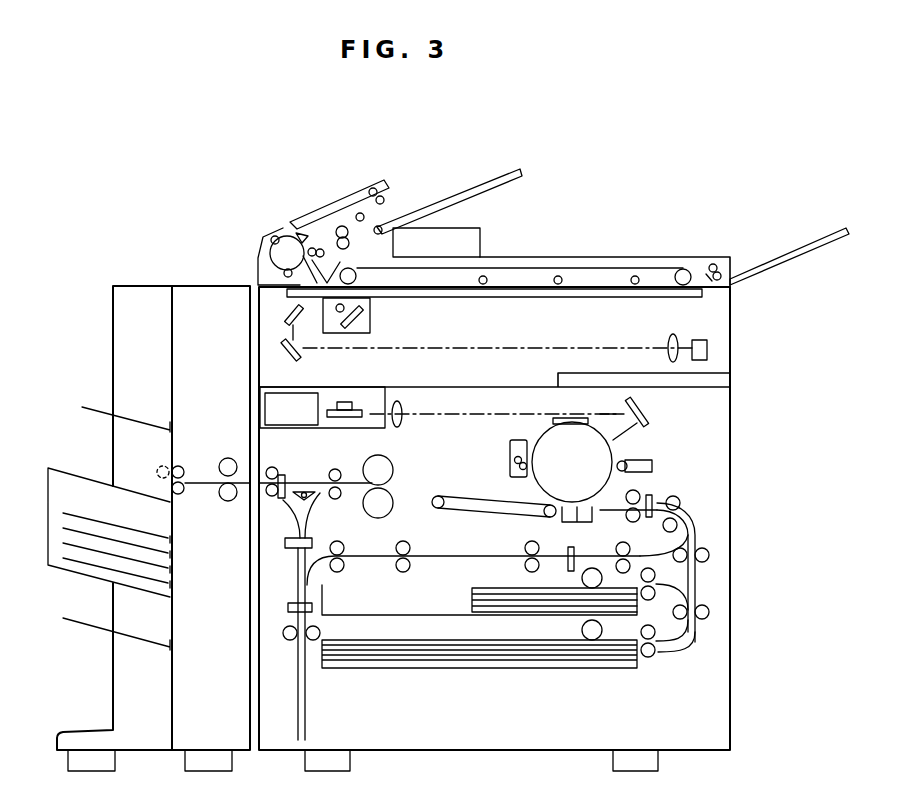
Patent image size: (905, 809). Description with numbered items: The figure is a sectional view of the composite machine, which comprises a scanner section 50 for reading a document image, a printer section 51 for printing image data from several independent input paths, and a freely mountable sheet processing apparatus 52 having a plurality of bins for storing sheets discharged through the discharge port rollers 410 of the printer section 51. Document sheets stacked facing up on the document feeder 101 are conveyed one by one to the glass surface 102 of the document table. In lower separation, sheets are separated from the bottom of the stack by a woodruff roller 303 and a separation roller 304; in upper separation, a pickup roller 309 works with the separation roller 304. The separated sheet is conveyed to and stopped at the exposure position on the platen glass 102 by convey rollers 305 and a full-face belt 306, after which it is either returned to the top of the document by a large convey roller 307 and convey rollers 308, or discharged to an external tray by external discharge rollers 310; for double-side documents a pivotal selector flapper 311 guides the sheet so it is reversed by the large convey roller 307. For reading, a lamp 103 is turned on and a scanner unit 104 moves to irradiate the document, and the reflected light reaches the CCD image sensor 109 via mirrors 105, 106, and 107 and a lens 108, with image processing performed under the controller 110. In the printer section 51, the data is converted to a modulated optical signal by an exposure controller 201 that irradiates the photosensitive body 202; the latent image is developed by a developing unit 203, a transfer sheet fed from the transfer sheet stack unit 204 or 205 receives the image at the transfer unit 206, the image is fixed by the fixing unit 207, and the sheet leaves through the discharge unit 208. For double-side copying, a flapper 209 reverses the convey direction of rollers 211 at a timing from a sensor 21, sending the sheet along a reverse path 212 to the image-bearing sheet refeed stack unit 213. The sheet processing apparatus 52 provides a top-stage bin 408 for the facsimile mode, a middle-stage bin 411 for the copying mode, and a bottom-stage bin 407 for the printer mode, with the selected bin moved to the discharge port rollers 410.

The sensor 21 is at (323, 598).
The scanner section 50 is at (780, 344).
The printer section 51 is at (760, 490).
The sheet processing apparatus 52 is at (104, 320).
The document feeder 101 is at (650, 257).
The platen glass 102 is at (545, 297).
The lamp 103 is at (337, 305).
The scanner unit 104 is at (370, 313).
The mirror 105 is at (370, 326).
The mirror 106 is at (283, 319).
The mirror 107 is at (290, 356).
The lens 108 is at (668, 346).
The CCD image sensor 109 is at (700, 340).
The controller 110 is at (313, 393).
The exposure controller 201 is at (356, 408).
The photosensitive body 202 is at (545, 438).
The developing unit 203 is at (655, 462).
The transfer sheet stack unit 204 is at (490, 618).
The transfer sheet stack unit 205 is at (458, 669).
The transfer unit 206 is at (570, 522).
The fixing unit 207 is at (393, 478).
The discharge unit 208 is at (270, 468).
The flapper 209 is at (270, 507).
The rollers 211 is at (290, 641).
The reverse path 212 is at (298, 566).
The image-bearing sheet refeed stack unit 213 is at (441, 555).
The woodruff roller 303 is at (410, 220).
The separation roller 304 is at (380, 252).
The convey rollers 305 is at (257, 262).
The full-face belt 306 is at (587, 266).
The large convey roller 307 is at (281, 227).
The convey rollers 308 is at (373, 188).
The pickup roller 309 is at (382, 222).
The external discharge rollers 310 is at (710, 263).
The pivotal selector flapper 311 is at (302, 233).
The bin 407 is at (145, 643).
The bin 408 is at (132, 416).
The discharge port rollers 410 is at (170, 502).
The bin 411 is at (48, 566).